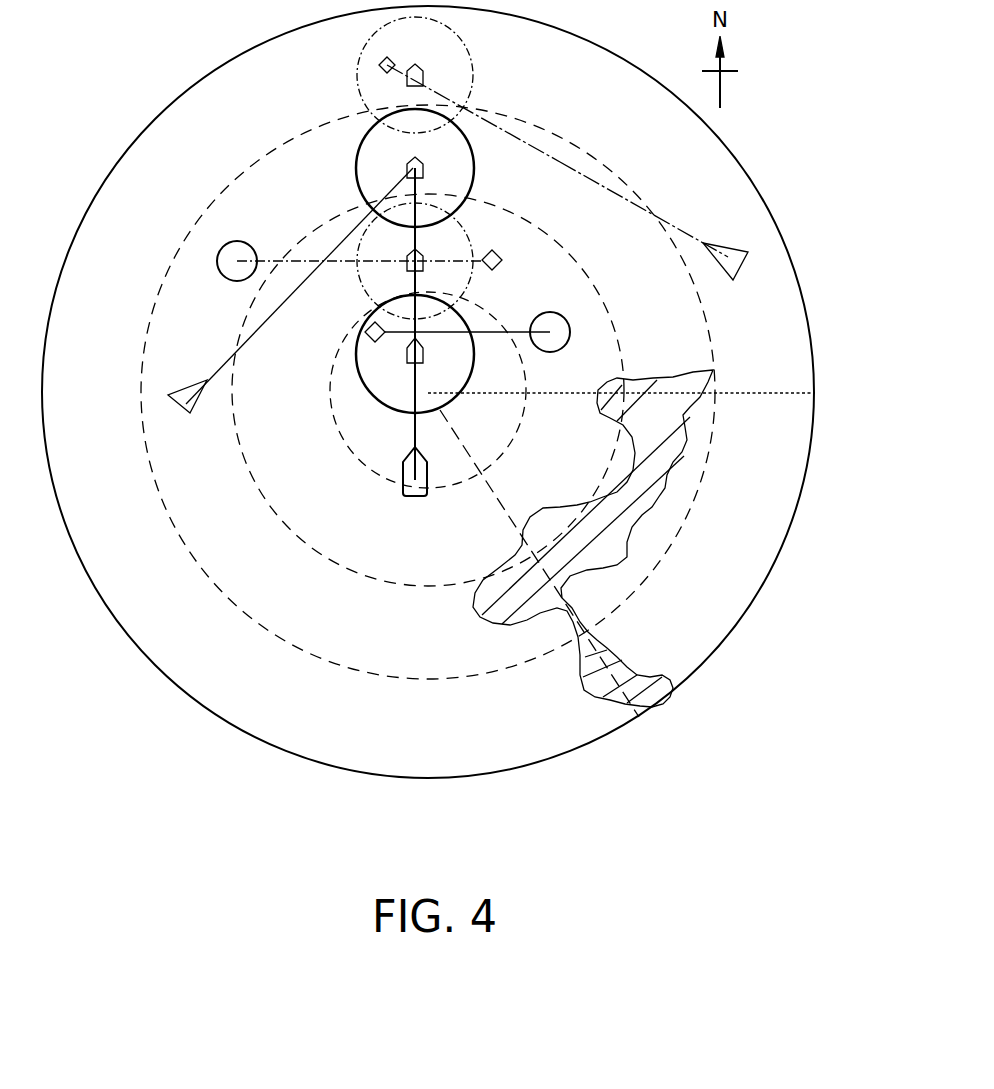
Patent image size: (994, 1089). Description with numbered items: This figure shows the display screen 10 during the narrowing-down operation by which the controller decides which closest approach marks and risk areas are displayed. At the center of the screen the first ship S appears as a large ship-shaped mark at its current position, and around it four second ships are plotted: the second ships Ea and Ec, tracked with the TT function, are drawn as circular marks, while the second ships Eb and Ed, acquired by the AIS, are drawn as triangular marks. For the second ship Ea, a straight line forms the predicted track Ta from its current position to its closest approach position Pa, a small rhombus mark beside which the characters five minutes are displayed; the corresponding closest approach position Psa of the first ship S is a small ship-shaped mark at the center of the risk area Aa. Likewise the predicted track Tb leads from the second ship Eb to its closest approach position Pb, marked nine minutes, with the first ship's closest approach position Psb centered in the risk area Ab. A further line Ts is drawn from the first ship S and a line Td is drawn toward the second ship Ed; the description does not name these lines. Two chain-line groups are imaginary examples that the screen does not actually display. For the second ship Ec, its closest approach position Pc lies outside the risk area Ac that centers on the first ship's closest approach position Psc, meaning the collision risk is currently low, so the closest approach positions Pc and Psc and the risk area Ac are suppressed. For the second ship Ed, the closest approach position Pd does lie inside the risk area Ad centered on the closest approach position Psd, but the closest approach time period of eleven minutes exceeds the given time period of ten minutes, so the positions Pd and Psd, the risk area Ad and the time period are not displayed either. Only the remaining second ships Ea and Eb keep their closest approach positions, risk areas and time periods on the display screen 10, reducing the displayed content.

The display screen 10 is at (757, 117).
The first ship S is at (400, 474).
The line to user position Ts is at (407, 414).
The predicted track of second ship Ea Ta is at (489, 331).
The predicted track of second ship Eb Tb is at (258, 324).
The line to satellite Ed Td is at (645, 200).
The second ship Ea is at (562, 316).
The second ship Eb is at (187, 412).
The second ship Ec is at (217, 261).
The second ship Ed is at (741, 268).
The closest approach position of second ship Ea Pa is at (366, 343).
The closest approach position of second ship Eb Pb is at (406, 170).
The closest approach position of second ship Ec Pc is at (497, 258).
The closest approach position of second ship Ed Pd is at (383, 64).
The closest approach position of first ship Psa is at (424, 353).
The closest approach position of first ship Psb is at (474, 165).
The closest approach position of first ship Psc is at (370, 220).
The closest approach position of first ship Psd is at (462, 41).
The risk area Aa is at (475, 367).
The risk area Ab is at (498, 127).
The risk area Ac is at (498, 203).
The risk area Ad is at (474, 89).